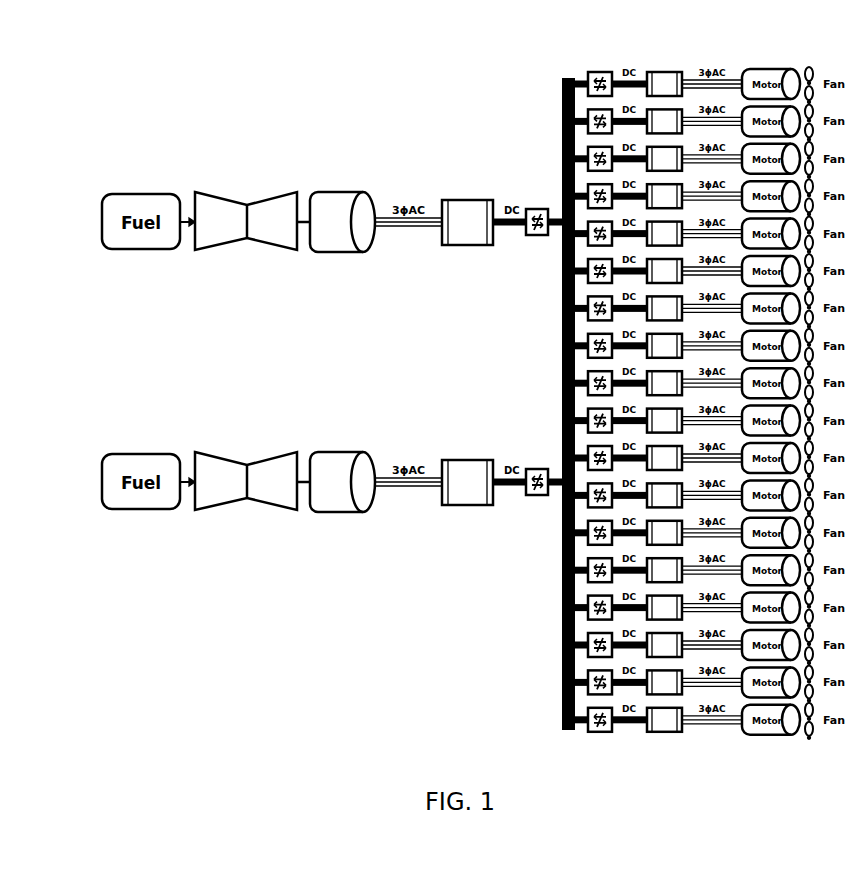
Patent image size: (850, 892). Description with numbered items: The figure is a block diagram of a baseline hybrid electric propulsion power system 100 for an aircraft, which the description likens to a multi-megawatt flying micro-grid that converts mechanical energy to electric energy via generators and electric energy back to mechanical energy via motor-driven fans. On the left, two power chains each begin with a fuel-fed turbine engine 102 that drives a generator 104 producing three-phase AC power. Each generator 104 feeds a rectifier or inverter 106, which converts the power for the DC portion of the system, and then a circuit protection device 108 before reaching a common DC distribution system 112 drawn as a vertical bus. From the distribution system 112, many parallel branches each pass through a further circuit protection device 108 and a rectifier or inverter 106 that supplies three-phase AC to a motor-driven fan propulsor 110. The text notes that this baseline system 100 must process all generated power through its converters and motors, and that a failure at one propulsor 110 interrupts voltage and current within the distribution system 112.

The baseline hybrid electric propulsion power system 100 is at (94, 131).
The turbine engine 102 is at (247, 205).
The generator 104 is at (345, 192).
The rectifier or inverter 106 is at (458, 200).
The circuit protection device 108 is at (532, 207).
The propulsor 110 is at (775, 68).
The distribution system 112 is at (562, 150).